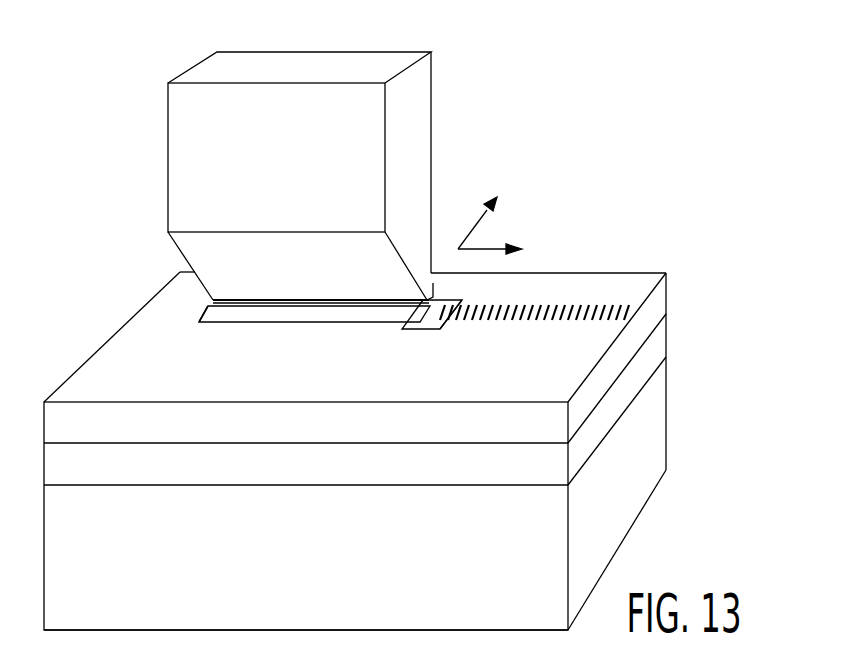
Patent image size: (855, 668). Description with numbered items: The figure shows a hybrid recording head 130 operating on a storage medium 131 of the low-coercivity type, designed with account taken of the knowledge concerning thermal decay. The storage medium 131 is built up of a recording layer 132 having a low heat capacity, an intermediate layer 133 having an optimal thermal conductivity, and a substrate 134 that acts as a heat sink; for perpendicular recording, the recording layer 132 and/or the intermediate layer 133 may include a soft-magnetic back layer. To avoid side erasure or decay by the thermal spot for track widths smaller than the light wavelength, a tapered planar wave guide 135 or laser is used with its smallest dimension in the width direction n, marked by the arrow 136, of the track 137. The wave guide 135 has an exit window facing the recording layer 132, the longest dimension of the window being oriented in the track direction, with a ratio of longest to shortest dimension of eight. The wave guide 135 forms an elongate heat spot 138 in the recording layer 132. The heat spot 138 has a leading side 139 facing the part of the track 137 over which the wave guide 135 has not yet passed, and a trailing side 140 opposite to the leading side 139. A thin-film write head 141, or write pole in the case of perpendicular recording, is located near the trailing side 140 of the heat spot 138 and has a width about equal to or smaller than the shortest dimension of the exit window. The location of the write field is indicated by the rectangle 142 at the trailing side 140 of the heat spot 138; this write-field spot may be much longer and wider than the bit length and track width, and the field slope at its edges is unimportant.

The recording head 130 is at (77, 141).
The storage medium 131 is at (760, 538).
The recording layer 132 is at (660, 290).
The intermediate layer 133 is at (660, 328).
The substrate 134 is at (660, 443).
The tapered planar wave guide 135 is at (418, 119).
The arrow 136 is at (529, 215).
The track 137 is at (565, 320).
The heat spot 138 is at (259, 316).
The leading side 139 is at (208, 313).
The trailing side 140 is at (445, 322).
The thin-film write head 141 is at (431, 289).
The rectangle 142 is at (410, 332).